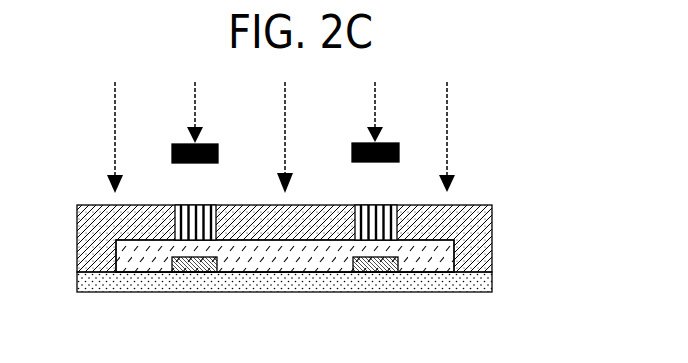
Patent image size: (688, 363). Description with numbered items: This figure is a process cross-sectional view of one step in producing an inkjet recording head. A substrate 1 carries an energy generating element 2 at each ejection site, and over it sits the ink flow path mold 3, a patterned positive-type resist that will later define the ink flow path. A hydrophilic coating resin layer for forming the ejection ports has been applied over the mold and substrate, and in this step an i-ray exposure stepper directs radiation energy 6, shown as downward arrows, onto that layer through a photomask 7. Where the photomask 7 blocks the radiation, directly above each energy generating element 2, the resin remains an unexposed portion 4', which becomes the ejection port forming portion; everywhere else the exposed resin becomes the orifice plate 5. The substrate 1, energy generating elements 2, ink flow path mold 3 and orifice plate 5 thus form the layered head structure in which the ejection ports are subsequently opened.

The substrate 1 is at (450, 278).
The energy generating element 2 is at (400, 262).
The ink flow path mold 3 is at (442, 250).
The unexposed portion 4' is at (286, 271).
The orifice plate 5 is at (478, 205).
The radiation energy 6 is at (447, 163).
The photomask 7 is at (399, 150).